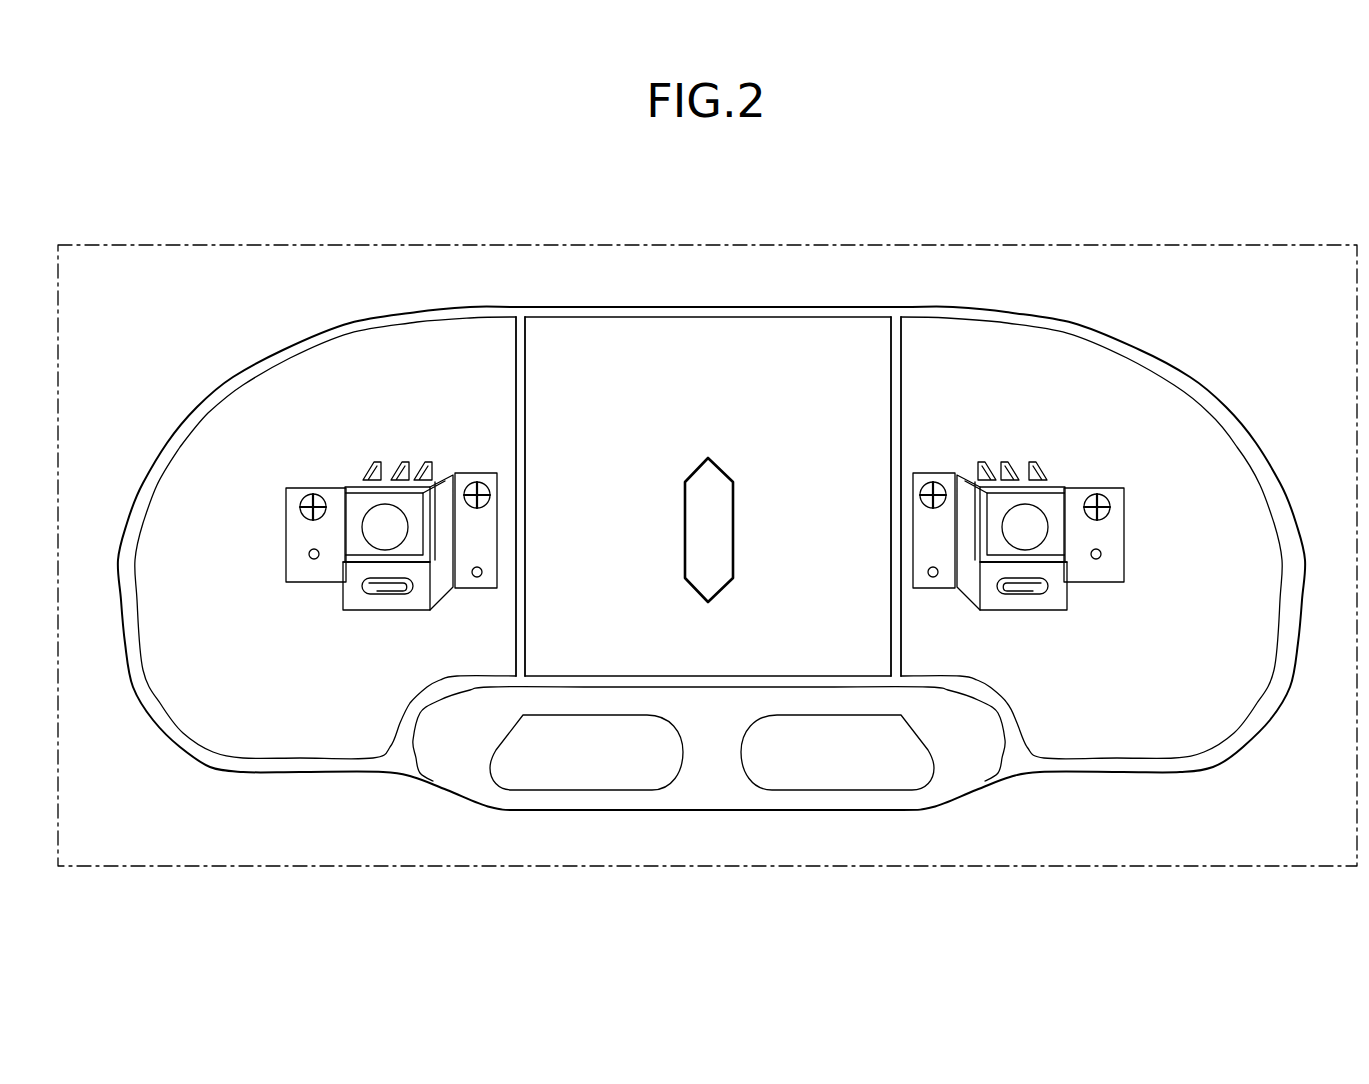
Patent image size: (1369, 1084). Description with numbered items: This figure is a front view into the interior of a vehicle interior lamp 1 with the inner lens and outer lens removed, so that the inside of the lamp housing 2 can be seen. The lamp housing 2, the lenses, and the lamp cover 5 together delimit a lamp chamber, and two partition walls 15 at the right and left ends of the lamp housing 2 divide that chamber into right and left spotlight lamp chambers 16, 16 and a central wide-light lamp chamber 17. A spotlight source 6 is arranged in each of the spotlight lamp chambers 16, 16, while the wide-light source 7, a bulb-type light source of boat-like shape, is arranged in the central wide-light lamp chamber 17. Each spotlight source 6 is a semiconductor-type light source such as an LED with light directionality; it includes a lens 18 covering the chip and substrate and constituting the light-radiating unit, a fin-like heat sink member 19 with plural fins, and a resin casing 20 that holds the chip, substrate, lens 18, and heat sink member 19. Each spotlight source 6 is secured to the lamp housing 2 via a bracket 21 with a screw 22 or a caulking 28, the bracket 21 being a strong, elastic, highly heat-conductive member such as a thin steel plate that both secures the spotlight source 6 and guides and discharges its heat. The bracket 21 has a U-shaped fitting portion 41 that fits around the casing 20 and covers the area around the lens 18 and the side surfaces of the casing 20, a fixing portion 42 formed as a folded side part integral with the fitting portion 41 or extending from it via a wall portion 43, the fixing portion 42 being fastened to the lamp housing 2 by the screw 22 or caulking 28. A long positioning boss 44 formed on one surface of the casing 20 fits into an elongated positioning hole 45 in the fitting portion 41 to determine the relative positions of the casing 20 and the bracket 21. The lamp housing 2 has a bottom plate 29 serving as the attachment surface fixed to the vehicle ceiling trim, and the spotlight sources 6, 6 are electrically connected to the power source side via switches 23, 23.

The vehicle interior lamp 1 is at (126, 217).
The lamp housing 2 is at (598, 307).
The lamp cover 5 is at (213, 243).
The spotlight source 6 is at (705, 520).
The wide-light source 7 is at (725, 473).
The partition wall 15 is at (528, 378).
The spotlight lamp chamber 16 is at (709, 513).
The wide-light lamp chamber 17 is at (709, 477).
The lens 18 is at (360, 522).
The heat sink member 19 is at (423, 468).
The casing 20 is at (357, 496).
The bracket 21 is at (337, 600).
The screw 22 is at (298, 503).
The switch 23 is at (590, 792).
The caulking 28 is at (307, 555).
The bottom plate 29 is at (432, 323).
The fitting portion 41 is at (347, 573).
The fixing portion 42 is at (300, 487).
The wall portion 43 is at (445, 538).
The positioning boss 44 is at (392, 594).
The positioning hole 45 is at (375, 590).